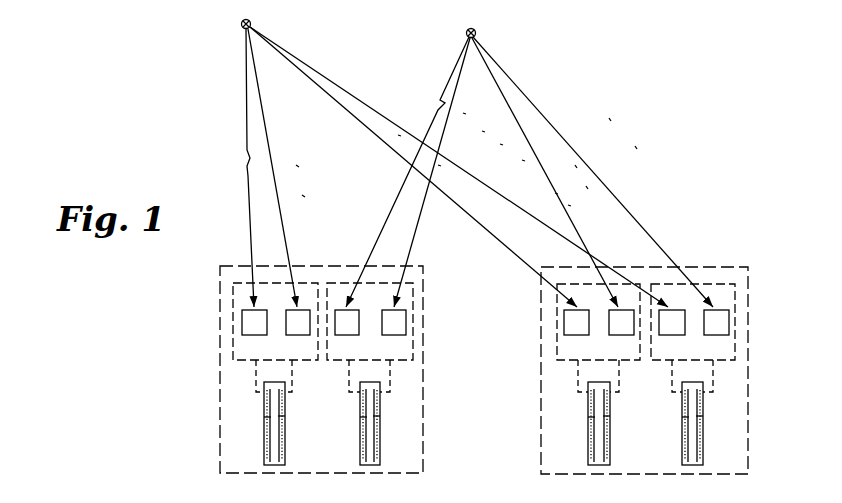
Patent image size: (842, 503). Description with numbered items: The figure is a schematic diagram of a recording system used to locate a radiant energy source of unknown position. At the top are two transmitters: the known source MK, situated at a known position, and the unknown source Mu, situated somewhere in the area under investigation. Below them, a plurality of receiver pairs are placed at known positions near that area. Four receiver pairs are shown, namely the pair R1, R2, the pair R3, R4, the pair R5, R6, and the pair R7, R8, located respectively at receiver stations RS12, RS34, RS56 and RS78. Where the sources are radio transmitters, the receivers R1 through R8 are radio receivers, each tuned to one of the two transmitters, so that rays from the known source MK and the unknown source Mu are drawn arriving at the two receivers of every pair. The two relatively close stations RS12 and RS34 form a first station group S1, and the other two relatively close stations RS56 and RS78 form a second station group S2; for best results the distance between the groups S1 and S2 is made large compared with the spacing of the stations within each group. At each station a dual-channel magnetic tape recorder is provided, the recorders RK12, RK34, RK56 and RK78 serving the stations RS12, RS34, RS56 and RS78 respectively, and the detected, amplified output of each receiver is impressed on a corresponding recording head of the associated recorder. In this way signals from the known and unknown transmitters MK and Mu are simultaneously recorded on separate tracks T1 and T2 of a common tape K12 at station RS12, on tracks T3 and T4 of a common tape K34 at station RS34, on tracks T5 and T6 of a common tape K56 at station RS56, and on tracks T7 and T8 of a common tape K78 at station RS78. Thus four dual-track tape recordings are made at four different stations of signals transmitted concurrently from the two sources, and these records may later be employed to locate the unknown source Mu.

The known radiant energy source MK is at (251, 24).
The unknown radiant energy source Mu is at (476, 33).
The station group S1 is at (219, 392).
The station group S2 is at (540, 389).
The receiver station RS12 is at (268, 283).
The receiver station RS34 is at (356, 283).
The receiver station RS56 is at (578, 284).
The receiver station RS78 is at (700, 284).
The radio receiver R1 is at (254, 335).
The radio receiver R2 is at (298, 335).
The radio receiver R3 is at (347, 335).
The radio receiver R4 is at (394, 335).
The radio receiver R5 is at (576, 335).
The radio receiver R6 is at (621, 335).
The radio receiver R7 is at (672, 335).
The radio receiver R8 is at (716, 335).
The dual-channel magnetic tape recorder RK12 is at (289, 378).
The dual-channel magnetic tape recorder RK34 is at (384, 378).
The dual-channel magnetic tape recorder RK56 is at (613, 378).
The dual-channel magnetic tape recorder RK78 is at (707, 378).
The common tape K12 is at (285, 458).
The common tape K34 is at (380, 458).
The common tape K56 is at (610, 458).
The common tape K78 is at (703, 458).
The track T1 is at (264, 417).
The track T2 is at (285, 416).
The track T3 is at (360, 417).
The track T4 is at (380, 416).
The track T5 is at (588, 417).
The track T6 is at (610, 416).
The track T7 is at (682, 417).
The track T8 is at (703, 416).